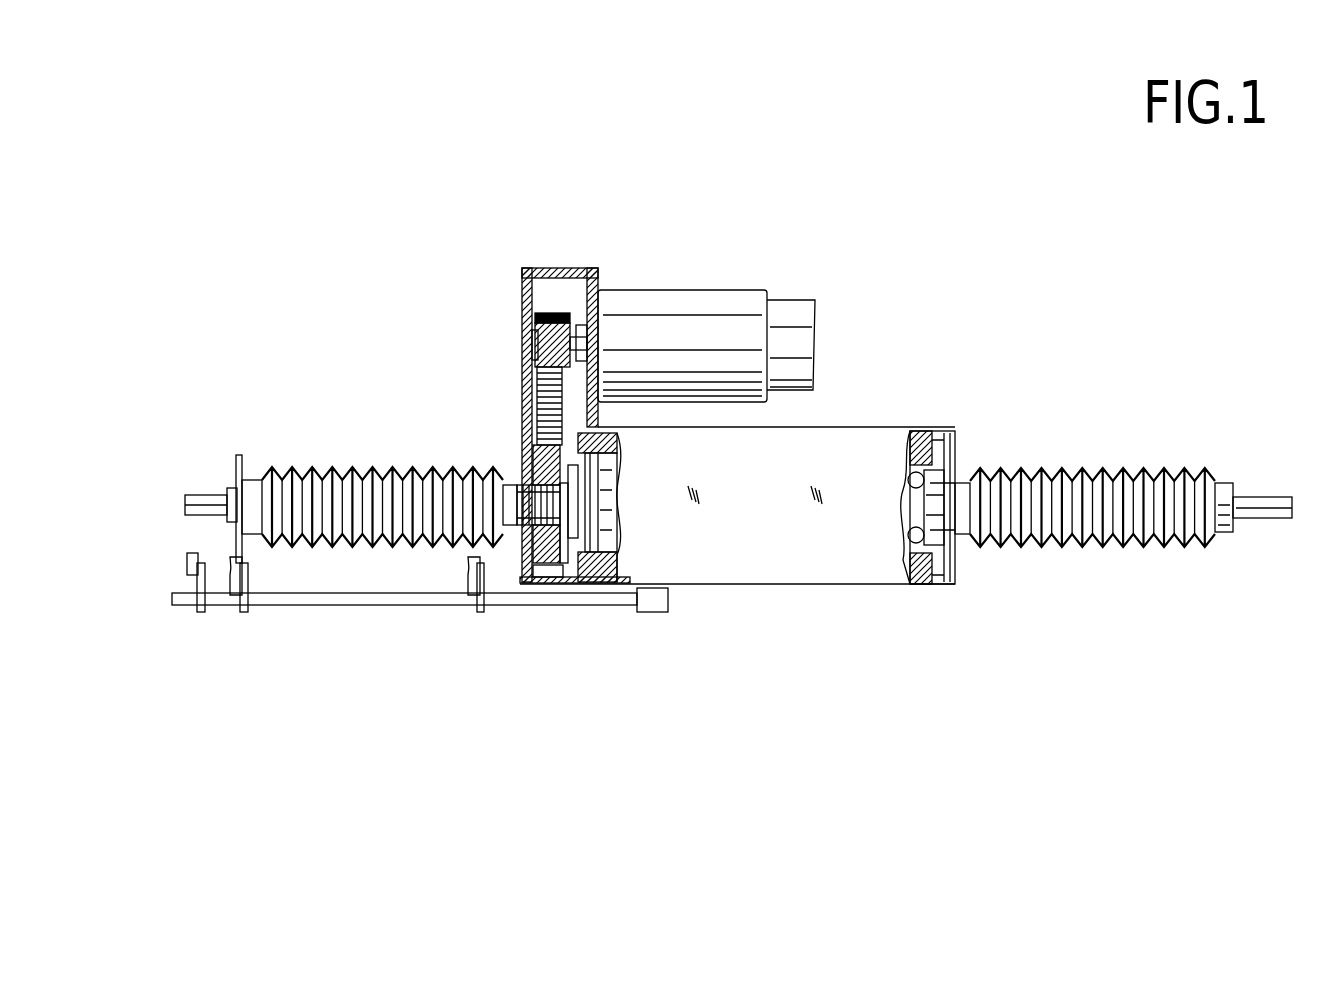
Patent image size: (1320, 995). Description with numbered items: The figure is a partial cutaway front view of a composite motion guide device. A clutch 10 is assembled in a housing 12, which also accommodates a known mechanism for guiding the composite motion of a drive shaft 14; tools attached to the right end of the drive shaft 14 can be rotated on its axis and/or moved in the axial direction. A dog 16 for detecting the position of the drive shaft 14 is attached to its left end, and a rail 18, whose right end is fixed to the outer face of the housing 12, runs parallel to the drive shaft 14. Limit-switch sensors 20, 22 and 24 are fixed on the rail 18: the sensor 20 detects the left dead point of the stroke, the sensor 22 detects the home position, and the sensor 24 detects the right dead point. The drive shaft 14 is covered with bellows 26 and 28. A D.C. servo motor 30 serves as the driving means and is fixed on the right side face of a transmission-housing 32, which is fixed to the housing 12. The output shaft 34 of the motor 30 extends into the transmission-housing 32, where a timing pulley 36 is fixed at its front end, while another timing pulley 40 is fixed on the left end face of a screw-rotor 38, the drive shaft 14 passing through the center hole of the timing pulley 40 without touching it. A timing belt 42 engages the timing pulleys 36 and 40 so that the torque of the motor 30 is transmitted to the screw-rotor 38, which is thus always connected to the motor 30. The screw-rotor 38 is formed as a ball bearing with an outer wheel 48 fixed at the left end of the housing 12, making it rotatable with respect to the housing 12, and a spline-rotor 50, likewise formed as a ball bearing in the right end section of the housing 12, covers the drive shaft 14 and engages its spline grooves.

The clutch 10 is at (885, 427).
The housing 12 is at (815, 587).
The drive shaft 14 is at (1275, 520).
The dog 16 is at (238, 455).
The rail 18 is at (325, 605).
The sensor 20 is at (480, 590).
The sensor 22 is at (240, 580).
The sensor 24 is at (187, 565).
The bellows 26 is at (1108, 468).
The bellows 28 is at (333, 468).
The D.C. servo motor 30 is at (725, 300).
The transmission-housing 32 is at (533, 268).
The output shaft 34 is at (528, 342).
The timing pulley 36 is at (590, 322).
The screw-rotor 38 is at (550, 572).
The timing pulley 40 is at (528, 455).
The timing belt 42 is at (528, 385).
The outer wheel 48 is at (617, 503).
The spline-rotor 50 is at (910, 496).